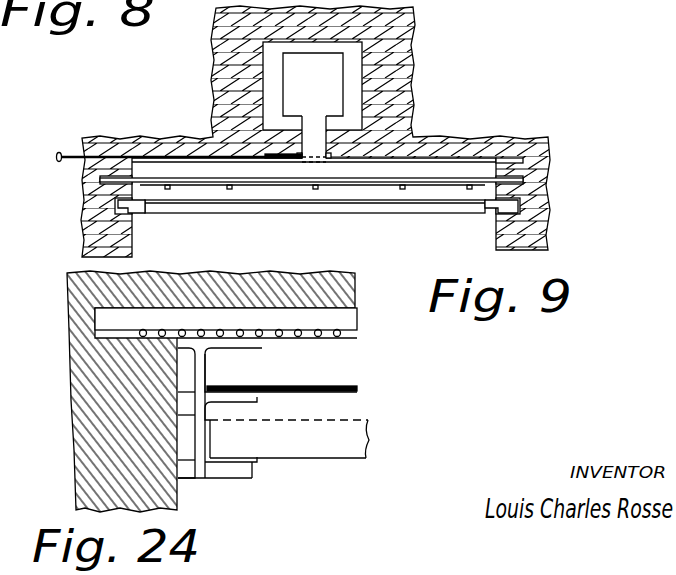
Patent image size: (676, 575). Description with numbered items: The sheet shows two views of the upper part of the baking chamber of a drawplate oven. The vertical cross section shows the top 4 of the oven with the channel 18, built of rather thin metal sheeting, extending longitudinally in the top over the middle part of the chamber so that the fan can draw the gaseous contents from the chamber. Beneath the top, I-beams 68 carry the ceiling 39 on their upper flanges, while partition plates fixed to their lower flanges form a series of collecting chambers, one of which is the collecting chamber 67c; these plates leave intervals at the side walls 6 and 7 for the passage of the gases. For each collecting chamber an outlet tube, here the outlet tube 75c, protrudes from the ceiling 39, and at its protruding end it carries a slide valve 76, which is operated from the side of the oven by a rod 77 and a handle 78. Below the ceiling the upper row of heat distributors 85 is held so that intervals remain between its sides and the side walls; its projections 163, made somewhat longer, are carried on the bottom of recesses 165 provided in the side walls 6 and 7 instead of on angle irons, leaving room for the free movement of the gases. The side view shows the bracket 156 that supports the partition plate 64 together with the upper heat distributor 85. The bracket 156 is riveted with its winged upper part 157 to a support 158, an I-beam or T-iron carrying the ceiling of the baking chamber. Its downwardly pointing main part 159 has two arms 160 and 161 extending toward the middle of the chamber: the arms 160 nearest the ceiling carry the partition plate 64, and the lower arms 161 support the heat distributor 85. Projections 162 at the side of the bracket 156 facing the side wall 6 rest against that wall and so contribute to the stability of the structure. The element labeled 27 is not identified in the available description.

In FIG. 24, the top 4 is at (318, 278).
In FIG. 9, the side wall 6 is at (90, 220).
In FIG. 24, the side wall 6 is at (72, 376).
In FIG. 9, the side wall 7 is at (536, 224).
In FIG. 9, the channel 18 is at (313, 84).
In FIG. 9, the casing 27 is at (312, 86).
In FIG. 9, the ceiling 39 is at (312, 174).
In FIG. 24, the partition plate 64 is at (347, 391).
In FIG. 9, the collecting chamber 67c is at (311, 171).
In FIG. 9, the I-beam 68 is at (176, 155).
In FIG. 9, the outlet tube 75c is at (314, 126).
In FIG. 9, the slide valve 76 is at (283, 158).
In FIG. 9, the rod 77 is at (82, 158).
In FIG. 9, the handle 78 is at (56, 157).
In FIG. 9, the upper row of heat distributors 85 is at (296, 200).
In FIG. 24, the upper row of heat distributors 85 is at (362, 459).
In FIG. 24, the bracket 156 is at (215, 429).
In FIG. 24, the winged upper part 157 is at (265, 344).
In FIG. 24, the support 158 is at (358, 316).
In FIG. 24, the main part 159 is at (205, 370).
In FIG. 24, the arm 160 is at (255, 399).
In FIG. 24, the arm 161 is at (256, 468).
In FIG. 24, the projection 162 is at (180, 407).
In FIG. 9, the projection 163 is at (139, 208).
In FIG. 9, the recess 165 is at (113, 204).